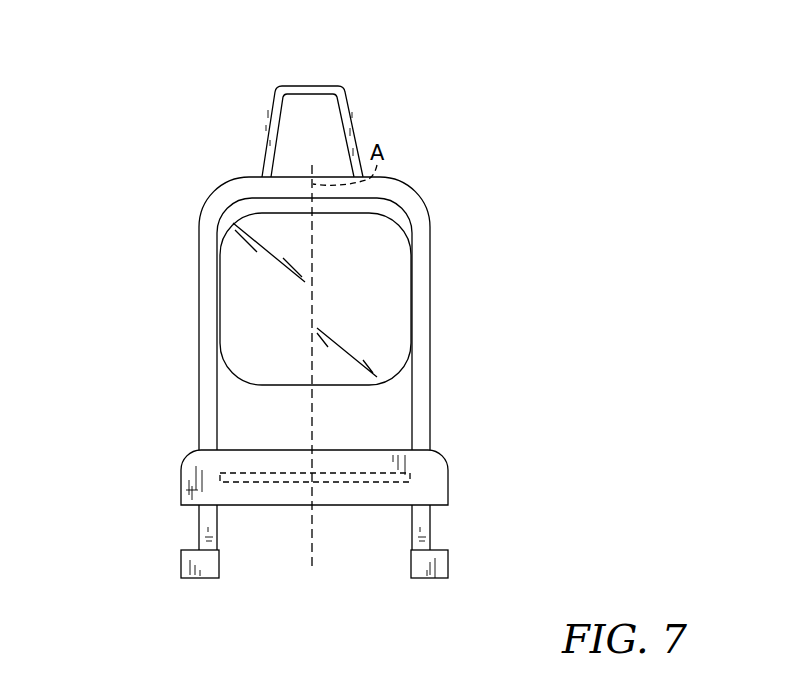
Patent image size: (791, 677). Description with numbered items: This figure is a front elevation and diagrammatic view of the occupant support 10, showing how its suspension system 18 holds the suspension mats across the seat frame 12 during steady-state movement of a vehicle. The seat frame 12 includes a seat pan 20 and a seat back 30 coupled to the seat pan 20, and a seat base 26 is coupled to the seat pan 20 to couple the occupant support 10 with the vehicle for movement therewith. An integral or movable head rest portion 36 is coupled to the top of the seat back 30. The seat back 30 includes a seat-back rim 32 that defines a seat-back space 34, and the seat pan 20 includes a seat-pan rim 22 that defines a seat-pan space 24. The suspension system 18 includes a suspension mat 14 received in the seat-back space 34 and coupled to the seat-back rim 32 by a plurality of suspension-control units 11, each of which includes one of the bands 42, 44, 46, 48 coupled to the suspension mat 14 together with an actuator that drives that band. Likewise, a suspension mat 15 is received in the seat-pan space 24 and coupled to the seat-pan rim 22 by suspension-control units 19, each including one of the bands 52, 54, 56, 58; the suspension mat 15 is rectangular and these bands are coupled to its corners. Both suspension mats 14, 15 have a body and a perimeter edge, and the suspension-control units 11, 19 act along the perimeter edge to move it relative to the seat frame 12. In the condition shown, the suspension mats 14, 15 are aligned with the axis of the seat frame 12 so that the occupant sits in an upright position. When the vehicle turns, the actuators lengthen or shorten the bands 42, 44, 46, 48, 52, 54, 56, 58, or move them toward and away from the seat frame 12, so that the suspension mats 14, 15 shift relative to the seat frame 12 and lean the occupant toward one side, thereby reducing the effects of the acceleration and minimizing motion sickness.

The occupant support 10 is at (477, 118).
The suspension-control units 11 is at (241, 199).
The seat frame 12 is at (406, 176).
The suspension mat 14 is at (412, 277).
The suspension mat 15 is at (270, 463).
The suspension system 18 is at (216, 285).
The suspension-control units 19 is at (415, 476).
The seat pan 20 is at (456, 468).
The seat-pan rim 22 is at (435, 512).
The seat-pan space 24 is at (247, 507).
The seat base 26 is at (458, 563).
The seat back 30 is at (434, 312).
The seat-back rim 32 is at (422, 244).
The seat-back space 34 is at (384, 392).
The head rest portion 36 is at (260, 135).
The band 42 is at (232, 208).
The band 44 is at (392, 211).
The band 46 is at (384, 369).
The band 48 is at (233, 385).
The band 52 is at (222, 472).
The band 54 is at (414, 468).
The band 56 is at (414, 480).
The band 58 is at (218, 483).